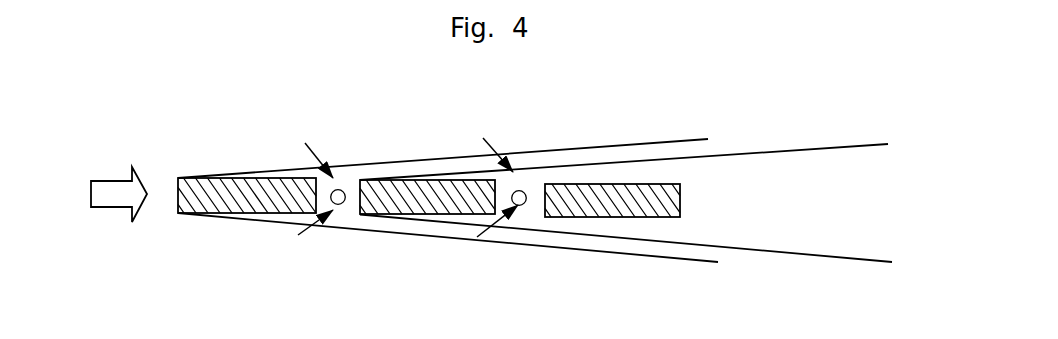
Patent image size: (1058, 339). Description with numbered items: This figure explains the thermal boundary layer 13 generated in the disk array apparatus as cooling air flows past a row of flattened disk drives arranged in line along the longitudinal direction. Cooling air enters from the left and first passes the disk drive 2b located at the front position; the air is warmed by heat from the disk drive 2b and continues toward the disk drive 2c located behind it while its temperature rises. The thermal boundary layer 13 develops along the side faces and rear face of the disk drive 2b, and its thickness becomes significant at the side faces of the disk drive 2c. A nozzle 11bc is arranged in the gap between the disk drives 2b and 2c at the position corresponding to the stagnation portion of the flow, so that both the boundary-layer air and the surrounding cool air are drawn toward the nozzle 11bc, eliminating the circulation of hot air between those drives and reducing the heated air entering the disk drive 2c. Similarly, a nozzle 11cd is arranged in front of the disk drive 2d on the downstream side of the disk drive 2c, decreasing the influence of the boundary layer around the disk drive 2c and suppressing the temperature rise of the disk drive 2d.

The thermal boundary layer 13 is at (535, 150).
The disk drive 2b is at (243, 203).
The disk drive 2c is at (438, 205).
The disk drive 2d is at (613, 210).
The nozzle 11bc is at (343, 203).
The nozzle 11cd is at (525, 204).